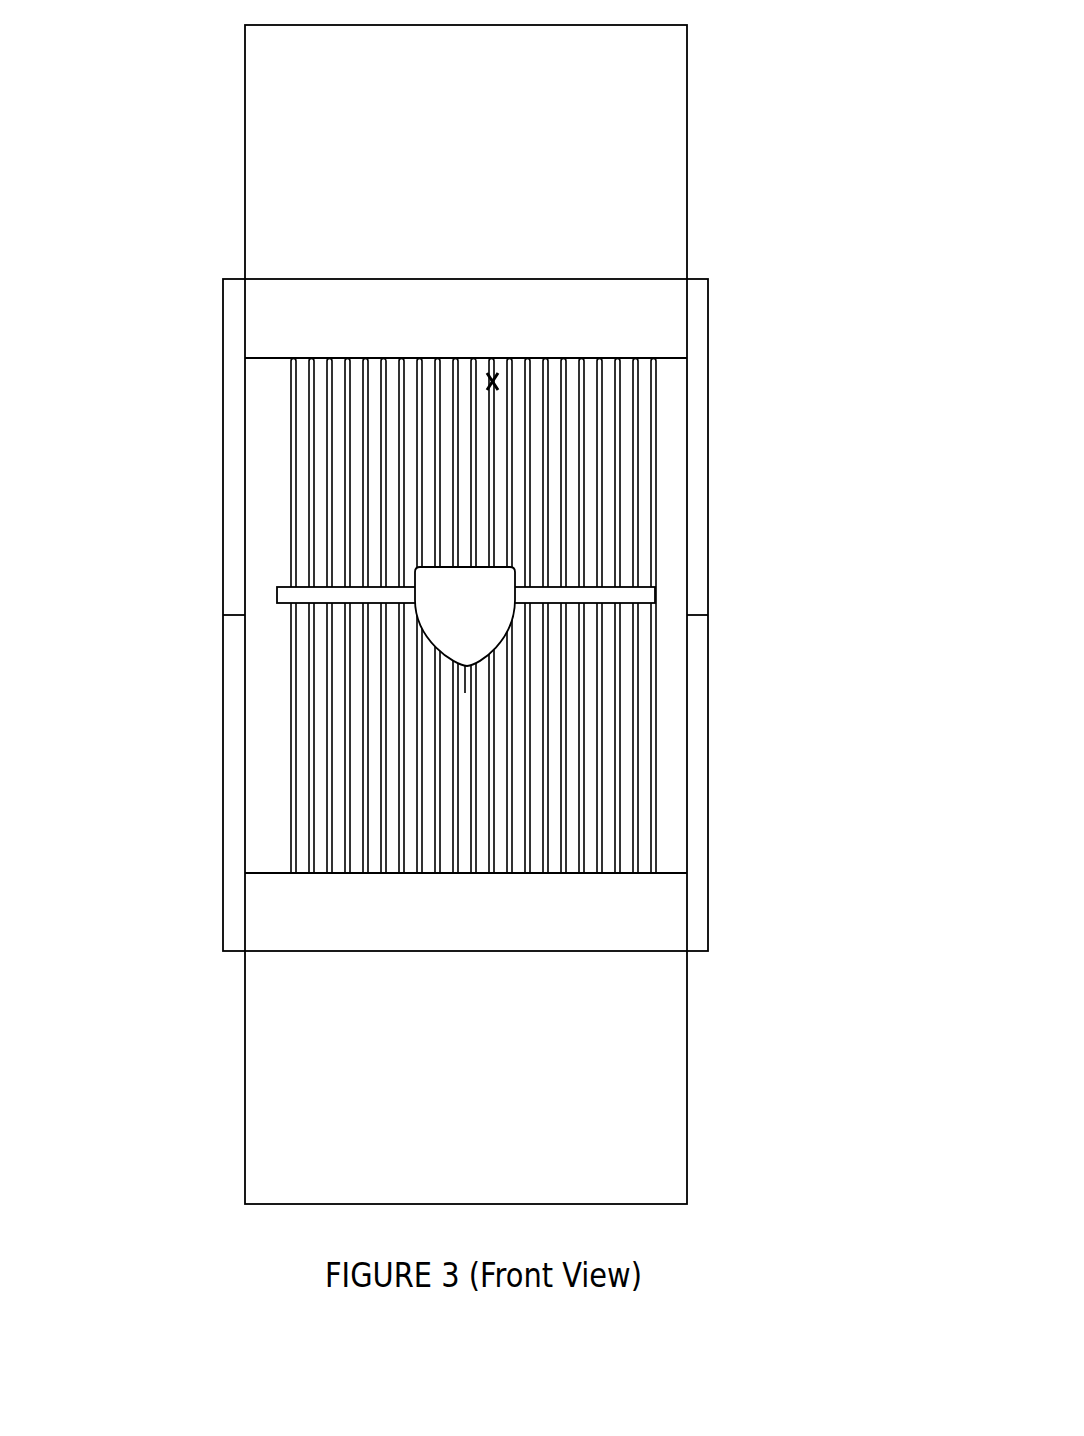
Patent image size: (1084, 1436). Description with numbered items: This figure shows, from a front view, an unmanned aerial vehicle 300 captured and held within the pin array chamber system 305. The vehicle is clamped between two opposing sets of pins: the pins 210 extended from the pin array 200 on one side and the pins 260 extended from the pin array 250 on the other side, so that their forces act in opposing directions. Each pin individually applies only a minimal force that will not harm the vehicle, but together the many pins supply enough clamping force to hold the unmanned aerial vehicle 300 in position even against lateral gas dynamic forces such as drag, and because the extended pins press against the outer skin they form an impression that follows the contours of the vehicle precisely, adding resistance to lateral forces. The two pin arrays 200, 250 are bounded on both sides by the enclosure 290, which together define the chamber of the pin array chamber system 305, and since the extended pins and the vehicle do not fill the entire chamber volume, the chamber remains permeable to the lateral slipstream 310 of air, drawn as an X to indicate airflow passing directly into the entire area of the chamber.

The pin array 200 is at (435, 637).
The pins 210 is at (473, 508).
The pin array 250 is at (348, 772).
The pins 260 is at (473, 740).
The enclosure 290 is at (695, 543).
The unmanned aerial vehicle 300 is at (445, 607).
The pin array chamber system 305 is at (260, 565).
The lateral slipstream 310 is at (493, 353).